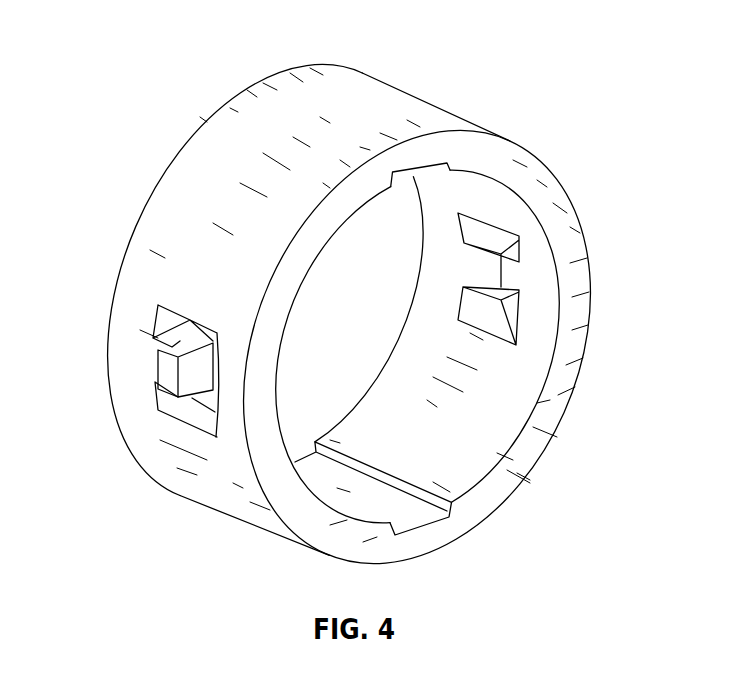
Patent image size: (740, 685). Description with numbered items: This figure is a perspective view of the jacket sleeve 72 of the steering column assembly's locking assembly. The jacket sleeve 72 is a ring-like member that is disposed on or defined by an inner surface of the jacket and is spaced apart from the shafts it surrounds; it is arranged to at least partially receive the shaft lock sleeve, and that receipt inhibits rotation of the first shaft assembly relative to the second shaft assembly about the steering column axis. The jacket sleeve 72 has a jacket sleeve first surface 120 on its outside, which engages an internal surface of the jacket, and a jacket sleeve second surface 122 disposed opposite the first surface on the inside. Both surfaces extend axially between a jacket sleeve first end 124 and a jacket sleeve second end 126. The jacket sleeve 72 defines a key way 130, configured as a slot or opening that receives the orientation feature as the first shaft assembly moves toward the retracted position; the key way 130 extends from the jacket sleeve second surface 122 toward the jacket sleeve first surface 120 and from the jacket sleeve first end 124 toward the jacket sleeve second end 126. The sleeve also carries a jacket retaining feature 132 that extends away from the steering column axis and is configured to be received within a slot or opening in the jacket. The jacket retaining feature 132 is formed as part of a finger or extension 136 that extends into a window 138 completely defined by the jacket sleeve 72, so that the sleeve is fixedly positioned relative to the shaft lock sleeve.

The jacket sleeve 72 is at (353, 321).
The jacket sleeve first surface 120 is at (243, 133).
The jacket sleeve second surface 122 is at (459, 425).
The jacket sleeve first end 124 is at (550, 405).
The jacket sleeve second end 126 is at (123, 232).
The key way 130 is at (447, 164).
The jacket retaining feature 132 is at (167, 372).
The extension 136 is at (182, 342).
The window 138 is at (200, 417).